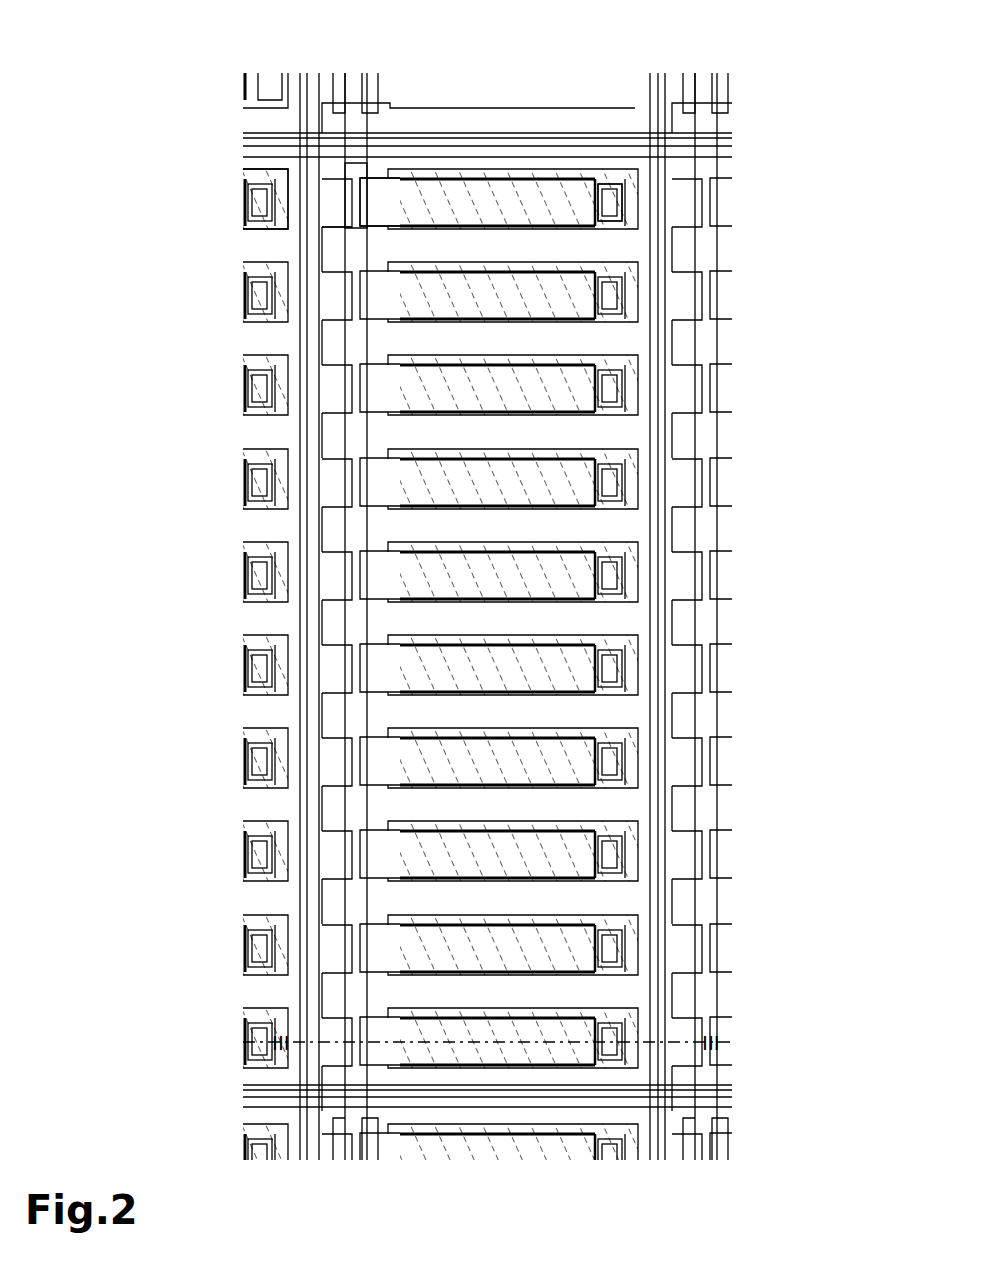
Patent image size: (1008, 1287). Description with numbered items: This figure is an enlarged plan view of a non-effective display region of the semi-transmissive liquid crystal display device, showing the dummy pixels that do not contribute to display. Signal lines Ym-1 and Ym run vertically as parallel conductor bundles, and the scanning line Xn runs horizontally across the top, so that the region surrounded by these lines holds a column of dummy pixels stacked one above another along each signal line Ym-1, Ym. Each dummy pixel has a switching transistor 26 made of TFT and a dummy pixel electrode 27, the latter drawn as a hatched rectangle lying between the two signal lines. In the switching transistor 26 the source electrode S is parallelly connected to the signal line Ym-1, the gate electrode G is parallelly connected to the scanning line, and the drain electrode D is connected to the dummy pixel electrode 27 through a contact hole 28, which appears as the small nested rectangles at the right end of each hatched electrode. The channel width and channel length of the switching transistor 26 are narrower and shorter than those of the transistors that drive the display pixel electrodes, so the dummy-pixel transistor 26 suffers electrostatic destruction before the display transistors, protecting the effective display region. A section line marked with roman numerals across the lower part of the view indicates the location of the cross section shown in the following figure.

The signal line Ym-1 is at (319, 73).
The signal line Ym is at (665, 78).
The scanning line Xn is at (722, 145).
The source electrode S is at (345, 195).
The gate electrode G is at (350, 220).
The drain electrode D is at (375, 200).
The switching transistor 26 is at (328, 242).
The dummy pixel electrode 27 is at (520, 175).
The contact hole 28 is at (620, 216).